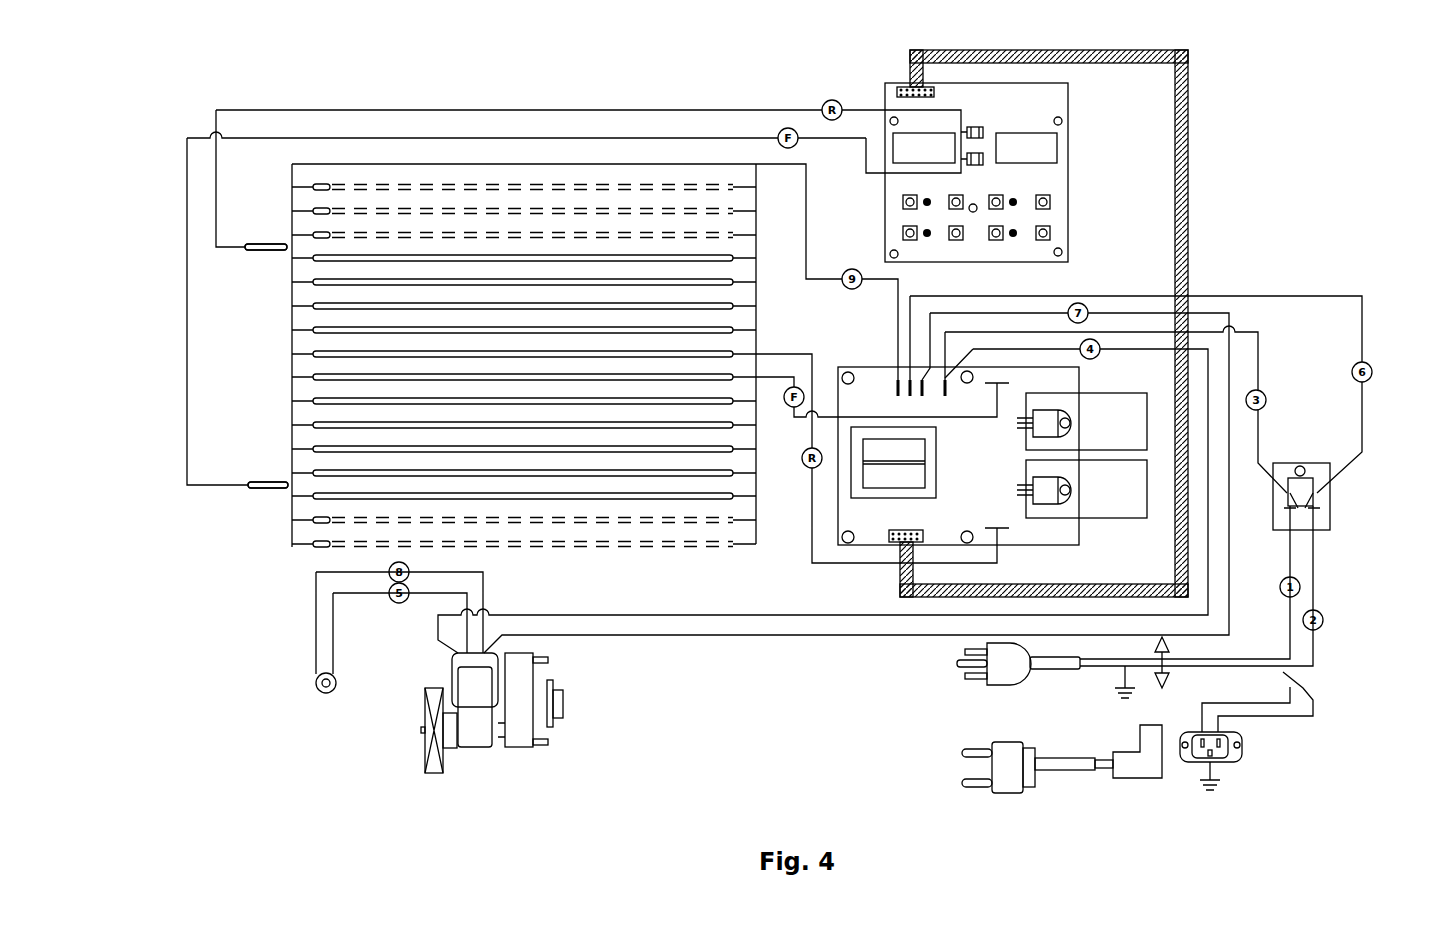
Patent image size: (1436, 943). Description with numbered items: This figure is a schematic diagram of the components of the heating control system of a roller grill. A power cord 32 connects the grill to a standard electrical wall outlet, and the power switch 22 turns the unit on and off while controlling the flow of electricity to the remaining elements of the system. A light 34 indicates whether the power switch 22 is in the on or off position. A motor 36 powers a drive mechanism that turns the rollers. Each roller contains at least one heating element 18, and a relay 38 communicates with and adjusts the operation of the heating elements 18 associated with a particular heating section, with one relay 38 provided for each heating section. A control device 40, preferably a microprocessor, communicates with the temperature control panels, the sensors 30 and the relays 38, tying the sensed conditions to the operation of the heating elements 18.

The heating element 18 is at (335, 257).
The power switch 22 is at (1330, 530).
The sensor 30 is at (218, 553).
The power cord 32 is at (985, 685).
The light 34 is at (318, 693).
The motor 36 is at (525, 747).
The relay 38 is at (1150, 420).
The control device 40 is at (1060, 165).